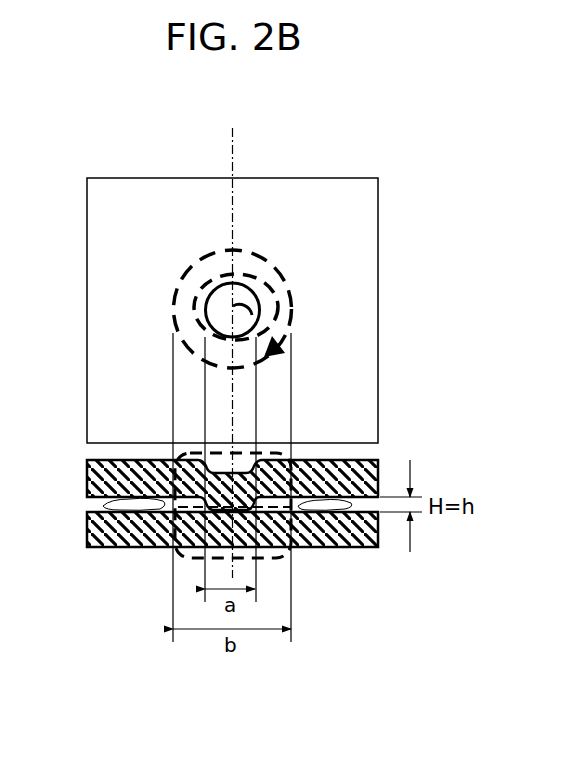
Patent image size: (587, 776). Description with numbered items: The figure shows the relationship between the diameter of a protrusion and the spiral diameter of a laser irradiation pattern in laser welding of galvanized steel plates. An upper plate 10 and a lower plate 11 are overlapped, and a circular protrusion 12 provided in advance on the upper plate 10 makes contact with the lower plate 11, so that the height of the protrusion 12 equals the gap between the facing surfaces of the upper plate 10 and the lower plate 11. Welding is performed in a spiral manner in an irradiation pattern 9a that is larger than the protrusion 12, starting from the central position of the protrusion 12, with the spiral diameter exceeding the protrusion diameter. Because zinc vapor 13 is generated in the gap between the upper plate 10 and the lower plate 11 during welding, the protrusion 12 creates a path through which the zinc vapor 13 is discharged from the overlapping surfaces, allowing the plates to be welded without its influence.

The irradiation pattern 9a is at (277, 268).
The upper plate 10 is at (90, 475).
The lower plate 11 is at (122, 535).
The protrusion 12 is at (258, 318).
The zinc vapor 13 is at (125, 504).